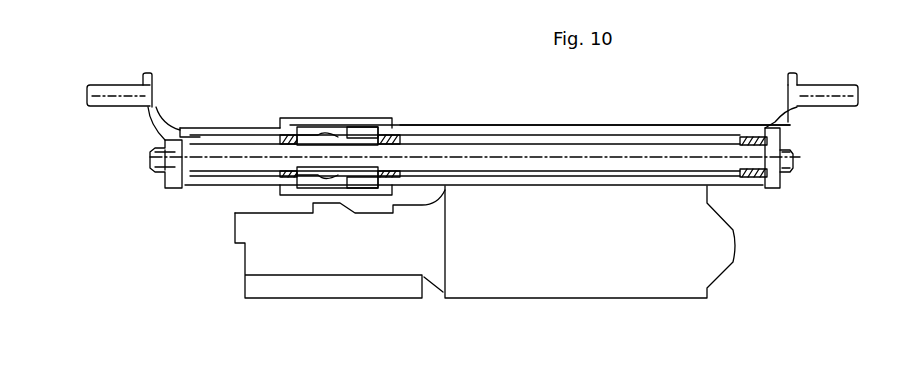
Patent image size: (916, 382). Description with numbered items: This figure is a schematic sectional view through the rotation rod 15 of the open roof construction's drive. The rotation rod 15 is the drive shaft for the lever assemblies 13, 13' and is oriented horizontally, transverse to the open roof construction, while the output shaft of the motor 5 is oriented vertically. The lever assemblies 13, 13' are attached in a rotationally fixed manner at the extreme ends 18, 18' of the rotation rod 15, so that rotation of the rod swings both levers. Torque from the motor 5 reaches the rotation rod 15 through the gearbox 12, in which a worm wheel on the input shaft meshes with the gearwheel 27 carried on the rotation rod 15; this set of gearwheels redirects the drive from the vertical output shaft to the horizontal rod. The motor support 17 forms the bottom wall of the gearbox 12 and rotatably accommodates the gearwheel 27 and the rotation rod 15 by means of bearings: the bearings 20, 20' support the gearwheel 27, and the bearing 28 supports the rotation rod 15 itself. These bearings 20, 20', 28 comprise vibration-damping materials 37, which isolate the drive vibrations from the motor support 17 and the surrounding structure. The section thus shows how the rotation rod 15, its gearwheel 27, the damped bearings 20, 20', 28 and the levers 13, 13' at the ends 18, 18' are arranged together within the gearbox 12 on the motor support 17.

The motor 5 is at (635, 260).
The gearbox 12 is at (638, 118).
The lever assembly 13 is at (826, 110).
The lever assembly 13' is at (115, 71).
The rotation rod 15 is at (567, 157).
The motor support 17 is at (233, 130).
The extreme end of the rotation rod 18 is at (755, 89).
The extreme end of the rotation rod 18' is at (177, 84).
The bearing 20 is at (350, 120).
The bearing 20' is at (171, 179).
The gearwheel 27 is at (320, 198).
The bearing 28 is at (358, 193).
The vibration-damping material 37 is at (378, 135).